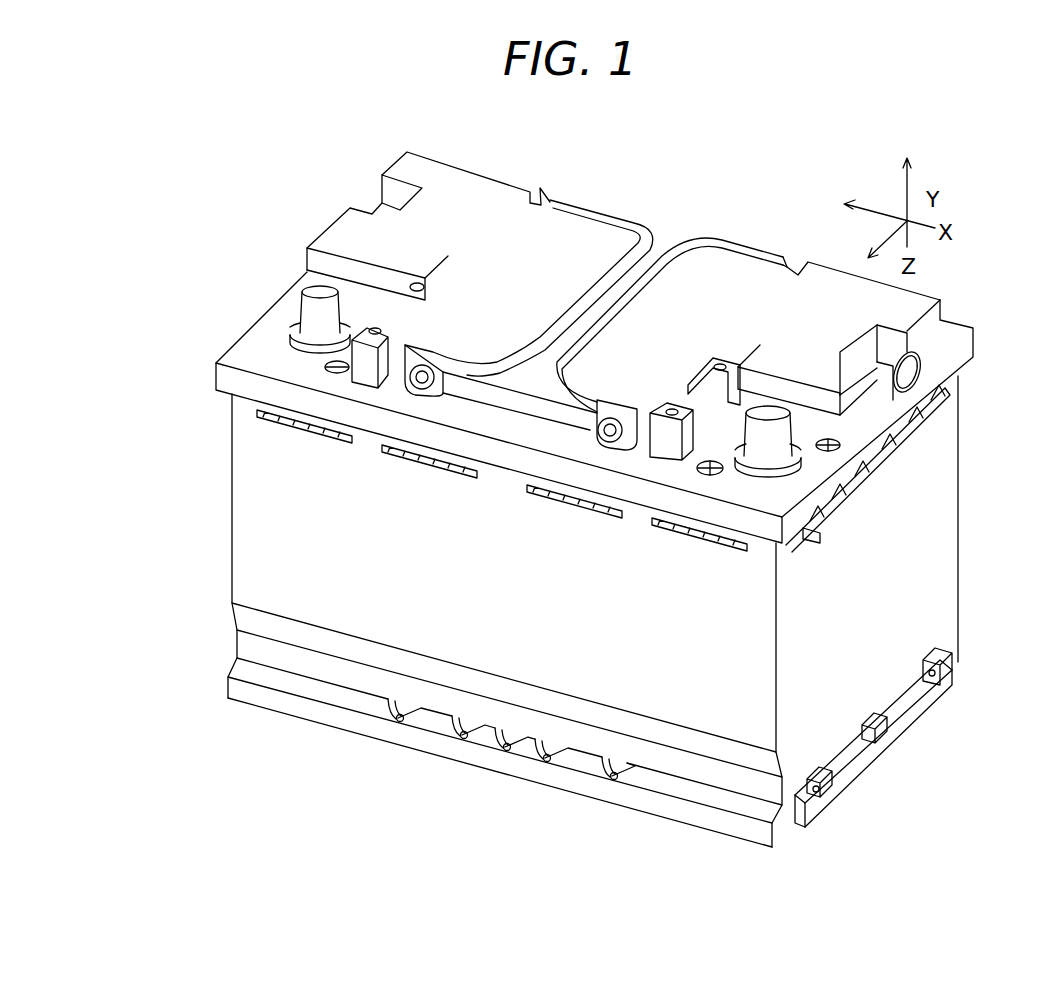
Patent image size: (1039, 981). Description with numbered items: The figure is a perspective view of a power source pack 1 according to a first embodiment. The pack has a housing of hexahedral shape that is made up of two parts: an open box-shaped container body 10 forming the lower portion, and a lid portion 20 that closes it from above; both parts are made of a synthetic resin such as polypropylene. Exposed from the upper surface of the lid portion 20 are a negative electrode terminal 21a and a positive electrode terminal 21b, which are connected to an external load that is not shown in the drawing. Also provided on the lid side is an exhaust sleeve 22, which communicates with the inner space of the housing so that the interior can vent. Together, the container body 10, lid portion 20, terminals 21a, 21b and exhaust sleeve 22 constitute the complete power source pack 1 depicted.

The power source pack 1 is at (704, 132).
The container body 10 is at (252, 500).
The lid portion 20 is at (248, 356).
The negative electrode terminal 21a is at (307, 313).
The positive electrode terminal 21b is at (785, 450).
The exhaust sleeve 22 is at (917, 378).